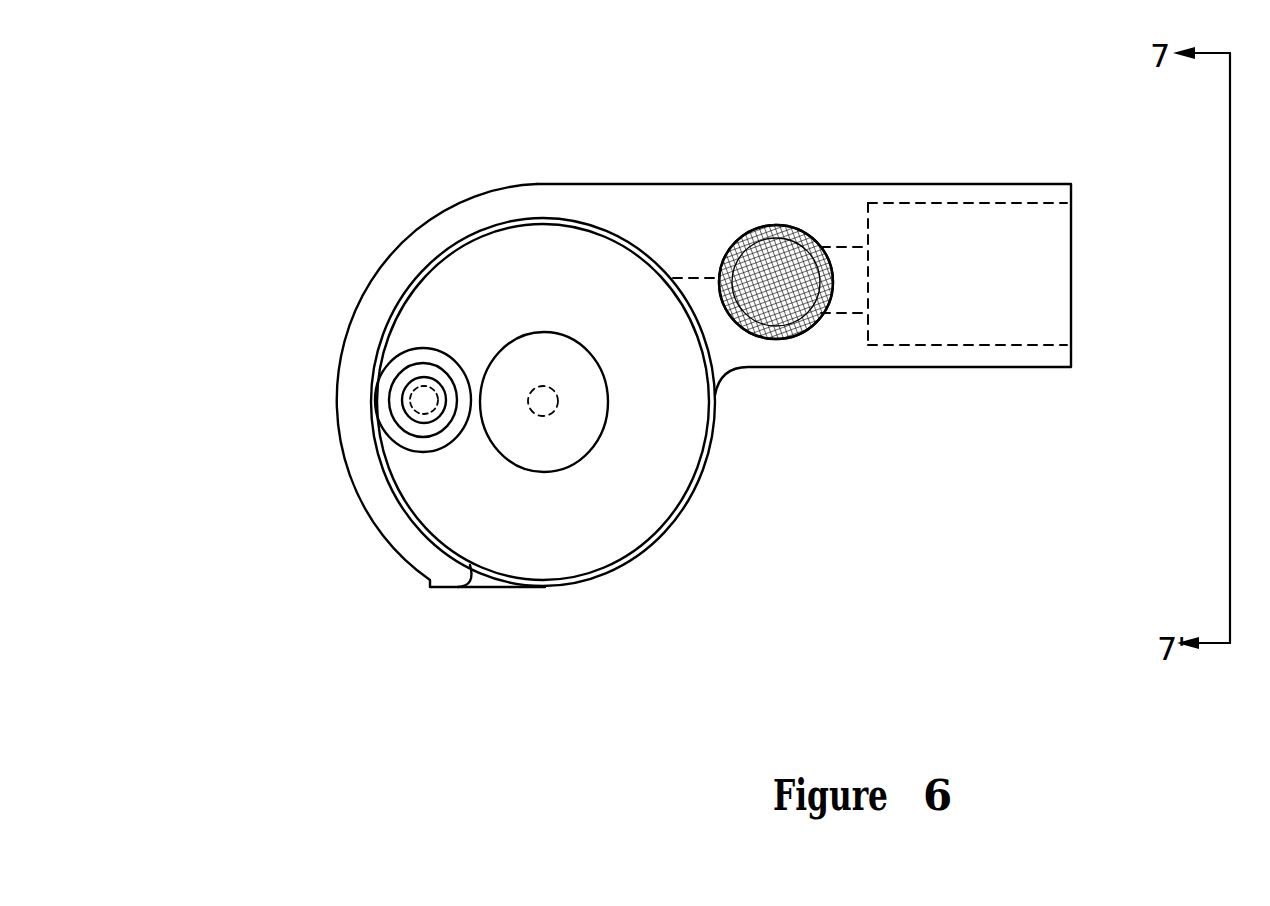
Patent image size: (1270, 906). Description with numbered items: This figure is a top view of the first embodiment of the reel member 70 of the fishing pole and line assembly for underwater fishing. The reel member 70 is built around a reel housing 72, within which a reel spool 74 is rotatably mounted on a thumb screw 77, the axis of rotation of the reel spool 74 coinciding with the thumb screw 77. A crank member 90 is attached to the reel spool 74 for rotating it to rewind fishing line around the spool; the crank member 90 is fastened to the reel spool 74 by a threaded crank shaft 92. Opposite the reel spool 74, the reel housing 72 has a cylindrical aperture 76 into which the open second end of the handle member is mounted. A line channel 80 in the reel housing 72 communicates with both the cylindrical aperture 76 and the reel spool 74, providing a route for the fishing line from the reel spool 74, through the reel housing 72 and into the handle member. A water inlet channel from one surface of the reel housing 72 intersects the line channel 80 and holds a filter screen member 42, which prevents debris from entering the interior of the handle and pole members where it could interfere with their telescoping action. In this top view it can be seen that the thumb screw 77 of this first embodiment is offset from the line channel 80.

The reel member 70 is at (314, 625).
The reel housing 72 is at (580, 202).
The reel spool 74 is at (473, 272).
The cylindrical aperture 76 is at (1078, 273).
The thumb screw 77 is at (590, 450).
The line channel 80 is at (692, 278).
The filter screen member 42 is at (782, 223).
The crank member 90 is at (412, 350).
The threaded crank shaft 92 is at (420, 405).